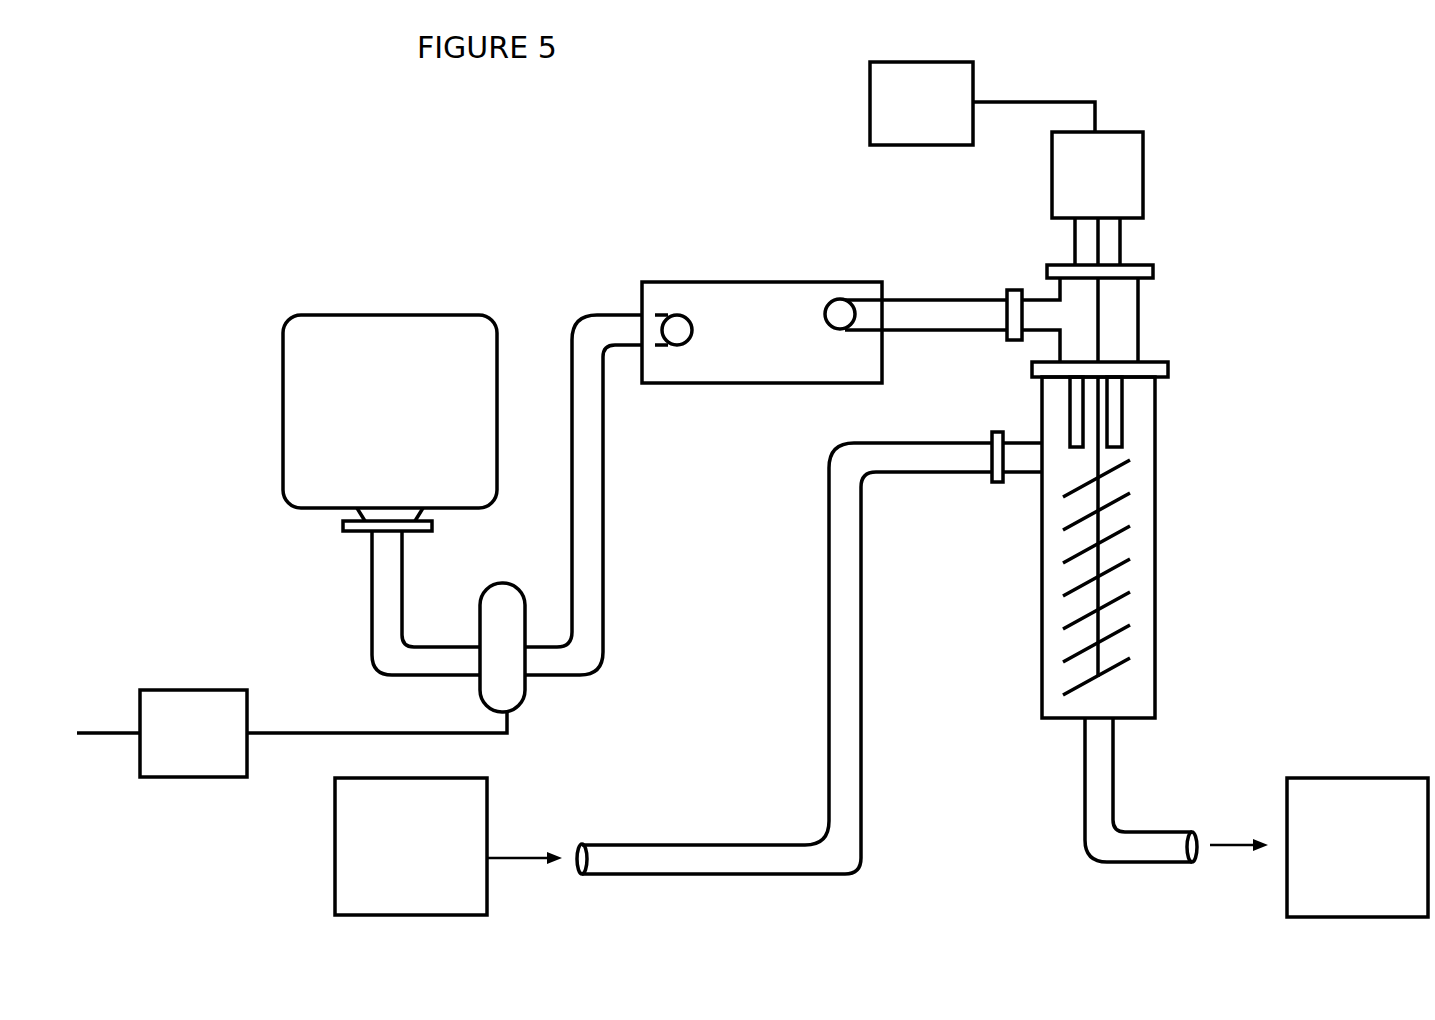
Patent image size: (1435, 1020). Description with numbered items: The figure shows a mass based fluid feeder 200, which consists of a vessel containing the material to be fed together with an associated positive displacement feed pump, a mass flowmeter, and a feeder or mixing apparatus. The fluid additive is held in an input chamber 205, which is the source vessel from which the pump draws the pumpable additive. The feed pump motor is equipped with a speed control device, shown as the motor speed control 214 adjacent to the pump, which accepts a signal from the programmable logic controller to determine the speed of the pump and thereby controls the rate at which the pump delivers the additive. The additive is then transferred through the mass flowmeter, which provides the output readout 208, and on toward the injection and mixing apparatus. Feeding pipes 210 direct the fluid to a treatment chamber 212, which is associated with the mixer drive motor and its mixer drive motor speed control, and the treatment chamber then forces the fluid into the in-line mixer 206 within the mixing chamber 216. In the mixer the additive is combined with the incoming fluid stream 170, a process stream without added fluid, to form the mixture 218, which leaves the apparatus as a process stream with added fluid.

The fluid stream 170 is at (335, 870).
The mass based fluid feeder 200 is at (290, 252).
The input chamber 205 is at (283, 348).
The in-line mixer 206 is at (525, 688).
The output readout 208 is at (720, 280).
The feeding pipes 210 is at (829, 696).
The treatment chamber 212 is at (1052, 187).
The motor speed control 214 is at (870, 118).
The mixing vessel 216 is at (1133, 440).
The mixture 218 is at (1317, 778).